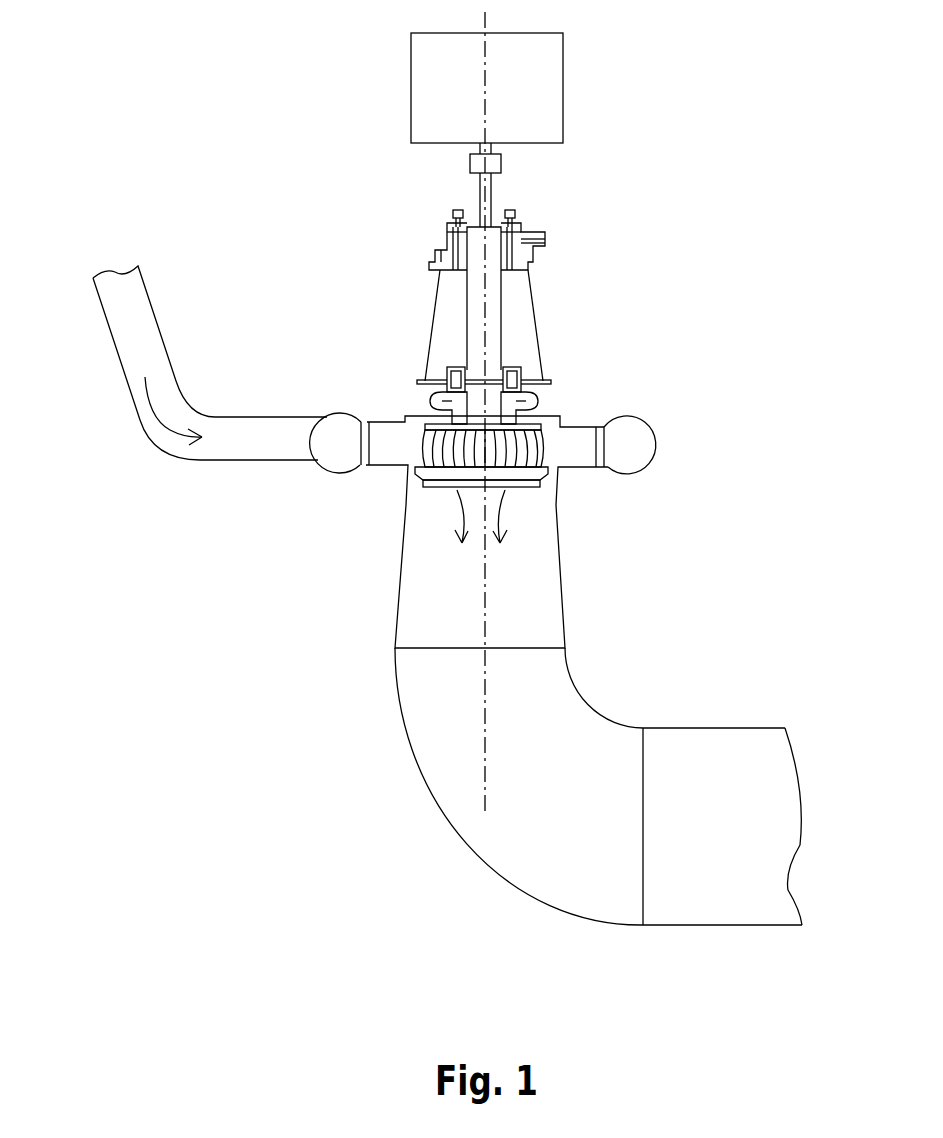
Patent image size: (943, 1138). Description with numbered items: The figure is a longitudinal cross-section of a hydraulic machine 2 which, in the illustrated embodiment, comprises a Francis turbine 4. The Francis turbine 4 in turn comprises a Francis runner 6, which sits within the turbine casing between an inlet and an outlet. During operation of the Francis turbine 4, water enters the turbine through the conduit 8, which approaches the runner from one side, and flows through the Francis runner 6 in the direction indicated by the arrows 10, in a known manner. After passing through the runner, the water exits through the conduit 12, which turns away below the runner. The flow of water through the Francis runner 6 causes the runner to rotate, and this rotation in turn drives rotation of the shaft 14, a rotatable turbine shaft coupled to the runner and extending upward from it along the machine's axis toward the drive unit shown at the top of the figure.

The hydraulic machine 2 is at (380, 225).
The Francis turbine 4 is at (577, 345).
The Francis runner 6 is at (437, 447).
The conduit 8 is at (132, 360).
The arrows 10 is at (178, 440).
The conduit 12 is at (703, 767).
The shaft 14 is at (480, 183).